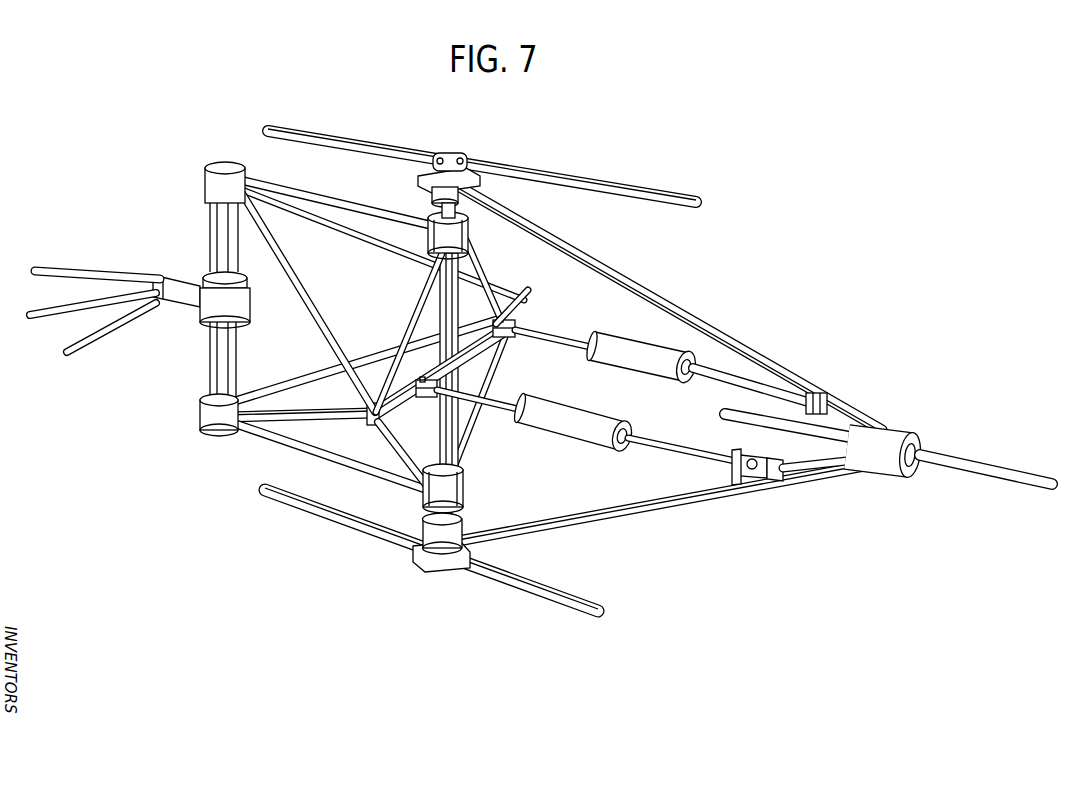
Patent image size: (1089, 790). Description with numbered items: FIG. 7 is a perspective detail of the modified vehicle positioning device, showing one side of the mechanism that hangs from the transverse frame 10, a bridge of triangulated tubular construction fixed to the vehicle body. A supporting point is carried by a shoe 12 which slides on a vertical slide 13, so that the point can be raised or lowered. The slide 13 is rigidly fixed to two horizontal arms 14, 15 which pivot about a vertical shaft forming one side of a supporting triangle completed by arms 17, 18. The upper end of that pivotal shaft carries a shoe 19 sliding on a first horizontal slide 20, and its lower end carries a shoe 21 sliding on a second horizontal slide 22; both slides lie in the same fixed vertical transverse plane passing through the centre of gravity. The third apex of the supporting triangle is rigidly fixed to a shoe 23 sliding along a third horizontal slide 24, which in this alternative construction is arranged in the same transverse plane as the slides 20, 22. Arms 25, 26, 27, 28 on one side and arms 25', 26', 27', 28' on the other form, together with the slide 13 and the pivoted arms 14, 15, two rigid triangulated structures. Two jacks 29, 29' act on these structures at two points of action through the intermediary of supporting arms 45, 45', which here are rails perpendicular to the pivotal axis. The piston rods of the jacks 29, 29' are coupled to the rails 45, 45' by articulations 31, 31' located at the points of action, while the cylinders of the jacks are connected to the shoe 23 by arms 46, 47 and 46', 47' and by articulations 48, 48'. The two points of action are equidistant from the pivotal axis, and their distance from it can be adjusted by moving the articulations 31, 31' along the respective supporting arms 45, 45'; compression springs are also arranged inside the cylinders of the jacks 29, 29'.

The transverse frame 10 is at (88, 268).
The shoe 12 is at (206, 312).
The vertical slide 13 is at (214, 232).
The horizontal arm 14 is at (330, 200).
The horizontal arm 15 is at (270, 445).
The arm of supporting triangle 17 is at (607, 262).
The arm of supporting triangle 18 is at (661, 512).
The shoe 19 is at (448, 156).
The first horizontal slide 20 is at (574, 173).
The shoe 21 is at (436, 555).
The second horizontal slide 22 is at (521, 590).
The shoe 23 is at (884, 475).
The third horizontal slide 24 is at (992, 480).
The arm 25 is at (307, 301).
The arm 25' is at (383, 245).
The arm 26 is at (365, 391).
The arm 26' is at (366, 360).
The arm 27 is at (407, 329).
The arm 27' is at (494, 277).
The arm 28 is at (404, 473).
The arm 28' is at (482, 403).
The jack 29 is at (536, 443).
The jack 29' is at (606, 336).
The articulation 31 is at (417, 410).
The articulation 31' is at (522, 352).
The supporting arm 45 is at (374, 468).
The supporting arm 45' is at (529, 291).
The arm 46 is at (680, 464).
The arm 46' is at (734, 392).
The arm 47 is at (824, 497).
The arm 47' is at (828, 405).
The articulation 48 is at (757, 495).
The articulation 48' is at (845, 381).